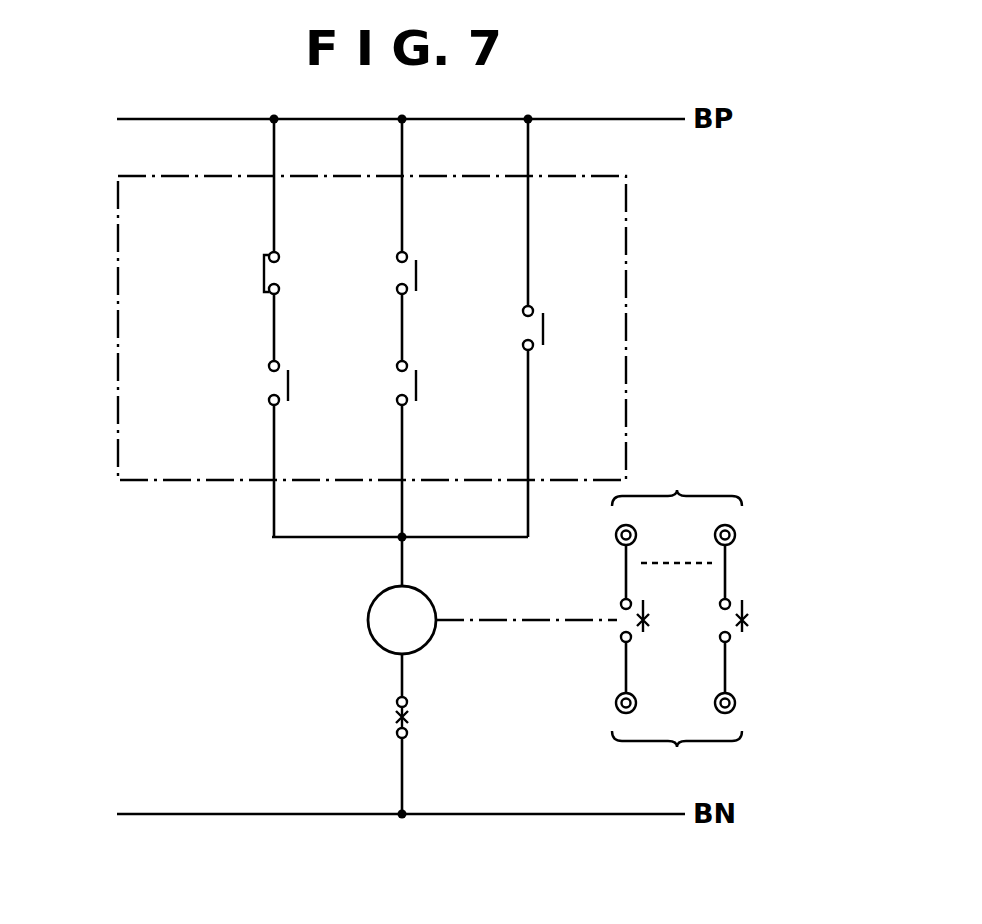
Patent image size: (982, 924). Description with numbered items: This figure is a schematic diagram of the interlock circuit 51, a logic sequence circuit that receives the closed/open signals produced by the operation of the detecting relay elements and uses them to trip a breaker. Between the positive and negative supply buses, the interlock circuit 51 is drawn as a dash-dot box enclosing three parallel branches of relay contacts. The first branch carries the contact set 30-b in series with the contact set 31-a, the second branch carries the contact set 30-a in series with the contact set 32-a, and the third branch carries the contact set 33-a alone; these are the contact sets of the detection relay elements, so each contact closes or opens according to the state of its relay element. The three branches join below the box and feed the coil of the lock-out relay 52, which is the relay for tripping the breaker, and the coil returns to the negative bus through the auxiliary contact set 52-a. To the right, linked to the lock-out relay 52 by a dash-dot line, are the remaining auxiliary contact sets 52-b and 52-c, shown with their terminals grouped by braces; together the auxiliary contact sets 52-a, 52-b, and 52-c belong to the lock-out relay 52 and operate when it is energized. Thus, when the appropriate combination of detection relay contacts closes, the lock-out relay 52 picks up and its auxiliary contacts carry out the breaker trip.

The interlock circuit 51 is at (118, 385).
The contact set of detection relay element 30-b is at (273, 272).
The contact set of detection relay element 30-a is at (416, 263).
The contact set of detection relay element 31-a is at (288, 378).
The contact set of detection relay element 32-a is at (416, 378).
The contact set of detection relay element 33-a is at (543, 322).
The lock-out relay 52 is at (368, 620).
The auxiliary contact set of lock-out relay 52-a is at (394, 722).
The auxiliary contact set of lock-out relay 52-b is at (643, 630).
The auxiliary contact set of lock-out relay 52-c is at (742, 630).